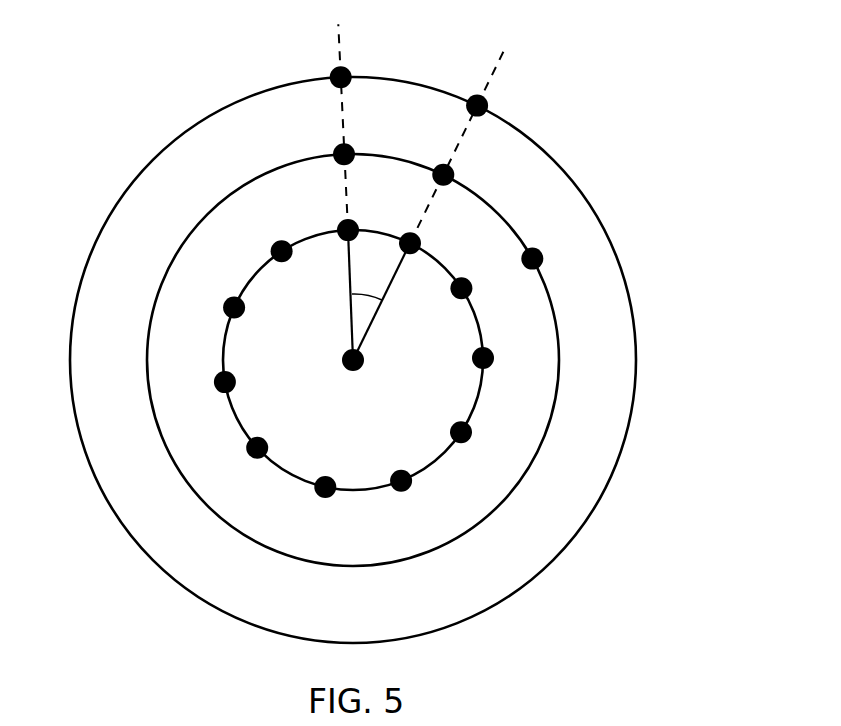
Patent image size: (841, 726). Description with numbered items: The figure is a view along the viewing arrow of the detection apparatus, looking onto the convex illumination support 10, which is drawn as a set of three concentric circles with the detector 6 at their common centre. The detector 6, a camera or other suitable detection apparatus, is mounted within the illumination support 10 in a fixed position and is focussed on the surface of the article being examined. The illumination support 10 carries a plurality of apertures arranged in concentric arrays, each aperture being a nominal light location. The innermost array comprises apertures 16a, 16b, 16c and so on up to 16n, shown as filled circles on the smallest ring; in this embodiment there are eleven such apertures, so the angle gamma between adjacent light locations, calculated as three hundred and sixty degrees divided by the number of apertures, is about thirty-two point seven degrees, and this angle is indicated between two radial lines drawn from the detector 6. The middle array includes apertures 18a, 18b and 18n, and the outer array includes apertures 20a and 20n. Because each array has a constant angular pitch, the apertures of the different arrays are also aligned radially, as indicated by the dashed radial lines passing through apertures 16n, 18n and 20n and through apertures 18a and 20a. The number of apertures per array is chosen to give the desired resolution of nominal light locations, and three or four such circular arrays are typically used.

The illumination support 10 is at (646, 482).
The detector 6 is at (362, 371).
The aperture 16a is at (492, 364).
The aperture 16b is at (469, 441).
The aperture 16c is at (410, 489).
The aperture 16n is at (465, 278).
The aperture 18a is at (454, 172).
The aperture 18b is at (542, 251).
The aperture 18n is at (353, 148).
The aperture 20a is at (488, 101).
The aperture 20n is at (351, 70).